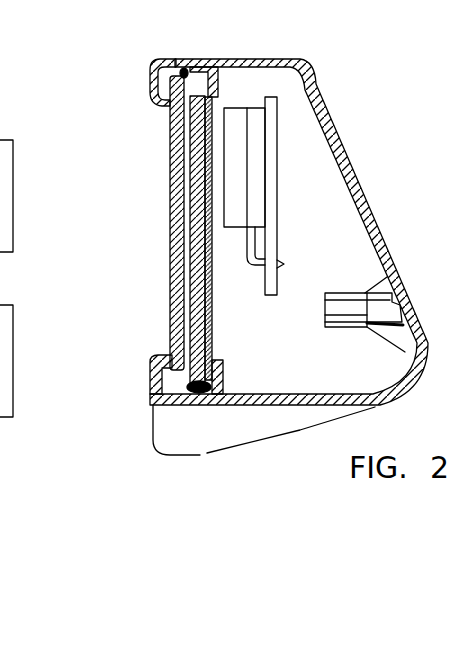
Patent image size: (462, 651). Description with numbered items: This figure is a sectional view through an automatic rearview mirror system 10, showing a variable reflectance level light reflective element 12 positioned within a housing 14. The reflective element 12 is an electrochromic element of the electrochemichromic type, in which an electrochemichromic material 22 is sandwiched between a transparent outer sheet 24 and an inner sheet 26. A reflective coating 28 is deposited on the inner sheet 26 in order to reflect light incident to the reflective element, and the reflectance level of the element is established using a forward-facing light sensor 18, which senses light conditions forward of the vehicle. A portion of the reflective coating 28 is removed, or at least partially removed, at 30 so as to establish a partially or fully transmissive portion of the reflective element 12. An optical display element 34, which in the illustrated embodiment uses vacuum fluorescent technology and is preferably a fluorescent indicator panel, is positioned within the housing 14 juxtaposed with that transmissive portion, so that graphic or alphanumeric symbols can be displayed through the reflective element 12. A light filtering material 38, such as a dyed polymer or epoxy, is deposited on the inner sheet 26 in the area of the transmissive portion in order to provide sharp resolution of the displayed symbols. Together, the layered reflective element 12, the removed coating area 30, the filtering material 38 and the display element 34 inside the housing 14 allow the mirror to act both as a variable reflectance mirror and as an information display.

The automatic rearview mirror system 10 is at (160, 62).
The variable reflectance level light reflective element 12 is at (170, 133).
The housing 14 is at (330, 120).
The forward-facing light sensor 18 is at (352, 293).
The electrochemichromic material 22 is at (187, 270).
The transparent outer sheet 24 is at (172, 163).
The inner sheet 26 is at (190, 325).
The reflective coating 28 is at (207, 340).
The removed portion of reflective coating 30 is at (207, 172).
The optical display element 34 is at (248, 108).
The light filtering material 38 is at (213, 135).